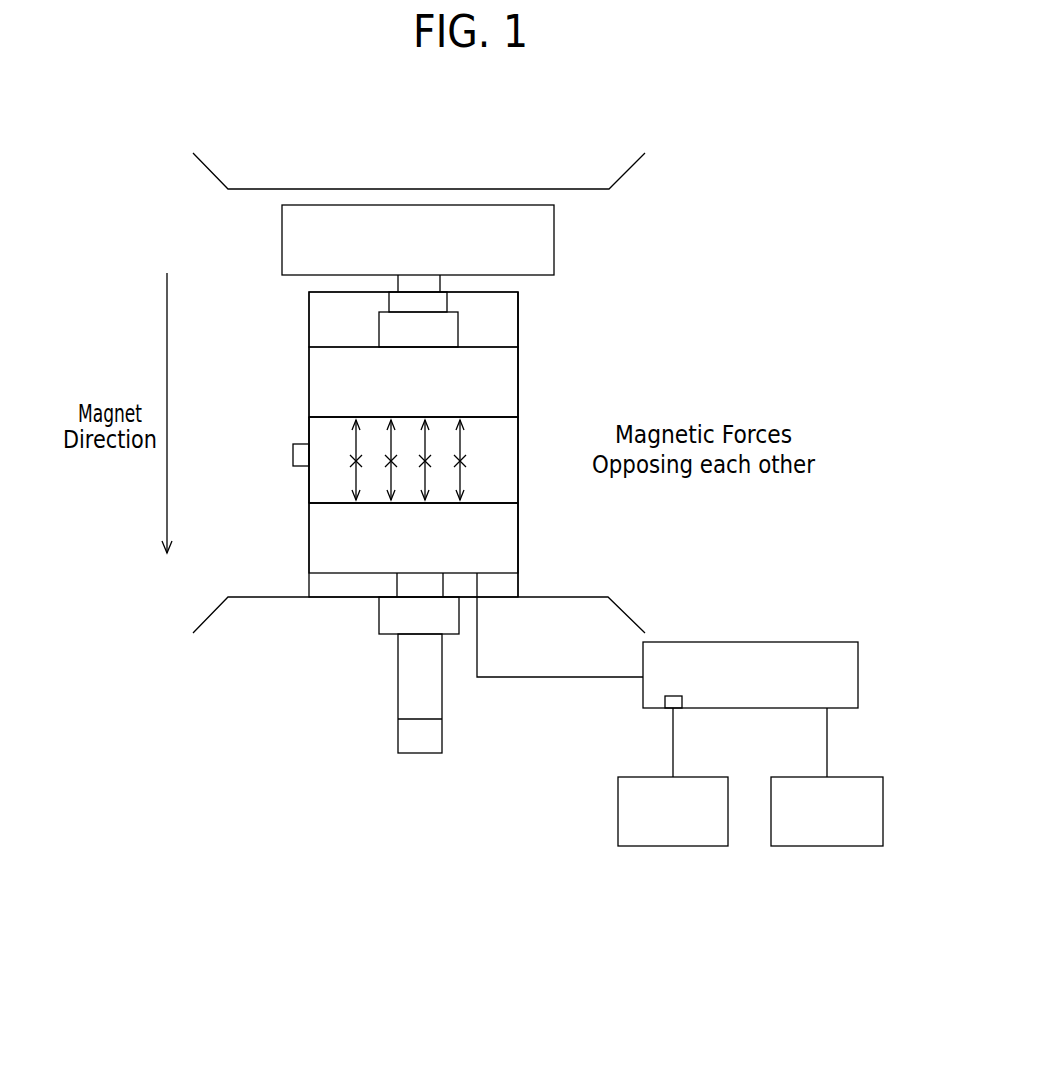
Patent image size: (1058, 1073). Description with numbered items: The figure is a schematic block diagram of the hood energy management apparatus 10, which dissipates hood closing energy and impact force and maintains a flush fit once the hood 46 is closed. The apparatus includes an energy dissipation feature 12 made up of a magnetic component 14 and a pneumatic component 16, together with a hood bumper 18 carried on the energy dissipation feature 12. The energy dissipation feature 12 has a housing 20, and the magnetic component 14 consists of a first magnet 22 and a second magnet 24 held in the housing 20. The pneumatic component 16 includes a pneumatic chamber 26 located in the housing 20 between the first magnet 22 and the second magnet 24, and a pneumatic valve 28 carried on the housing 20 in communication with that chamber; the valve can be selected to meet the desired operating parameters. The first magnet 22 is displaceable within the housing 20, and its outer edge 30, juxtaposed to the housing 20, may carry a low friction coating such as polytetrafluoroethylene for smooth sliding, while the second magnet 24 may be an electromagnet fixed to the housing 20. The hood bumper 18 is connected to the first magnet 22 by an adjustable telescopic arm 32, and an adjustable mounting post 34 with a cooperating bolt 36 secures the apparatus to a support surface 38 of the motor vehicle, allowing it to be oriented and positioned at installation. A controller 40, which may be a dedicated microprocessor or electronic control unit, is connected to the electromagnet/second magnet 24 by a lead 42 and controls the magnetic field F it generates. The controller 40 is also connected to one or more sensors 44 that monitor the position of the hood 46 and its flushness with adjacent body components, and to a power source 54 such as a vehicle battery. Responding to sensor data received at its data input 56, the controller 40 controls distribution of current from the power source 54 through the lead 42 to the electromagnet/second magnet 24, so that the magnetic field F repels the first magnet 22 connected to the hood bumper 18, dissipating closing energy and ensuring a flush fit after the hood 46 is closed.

The hood energy management apparatus 10 is at (695, 218).
The energy dissipation feature 12 is at (282, 523).
The magnetic component 14 is at (549, 409).
The pneumatic component 16 is at (288, 472).
The hood bumper 18 is at (310, 238).
The housing 20 is at (518, 327).
The first magnet 22 is at (325, 383).
The second magnet 24 is at (499, 541).
The pneumatic chamber 26 is at (495, 453).
The pneumatic valve 28 is at (293, 452).
The outer edge 30 is at (518, 360).
The adjustable telescopic arm 32 is at (400, 302).
The adjustable mounting post 34 is at (402, 667).
The cooperating bolt 36 is at (390, 620).
The support surface 38 is at (246, 598).
The controller 40 is at (763, 642).
The lead 42 is at (533, 677).
The sensors 44 is at (648, 847).
The hood 46 is at (583, 190).
The power source 54 is at (842, 847).
The data input 56 is at (672, 708).
The magnetic field F is at (430, 462).